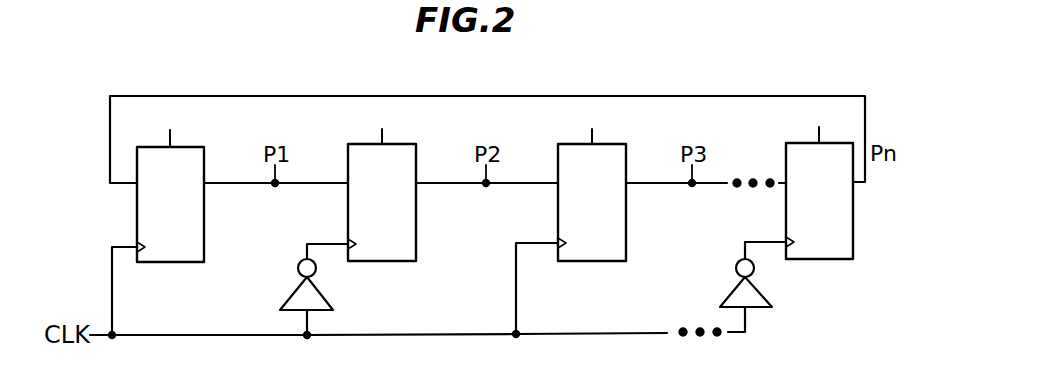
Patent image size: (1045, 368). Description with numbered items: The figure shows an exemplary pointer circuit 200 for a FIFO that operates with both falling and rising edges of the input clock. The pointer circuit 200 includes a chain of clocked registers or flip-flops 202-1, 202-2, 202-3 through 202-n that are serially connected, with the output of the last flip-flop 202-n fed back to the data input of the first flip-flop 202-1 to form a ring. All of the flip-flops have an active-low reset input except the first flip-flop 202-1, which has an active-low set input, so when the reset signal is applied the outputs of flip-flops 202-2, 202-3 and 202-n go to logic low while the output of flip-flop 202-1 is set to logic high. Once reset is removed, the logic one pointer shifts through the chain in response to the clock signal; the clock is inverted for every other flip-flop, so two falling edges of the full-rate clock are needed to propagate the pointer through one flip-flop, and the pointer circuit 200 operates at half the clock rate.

The pointer circuit 200 is at (775, 78).
The first flip-flop 202-1 is at (204, 147).
The second flip-flop 202-2 is at (417, 144).
The third flip-flop 202-3 is at (626, 144).
The last flip-flop 202-n is at (786, 213).